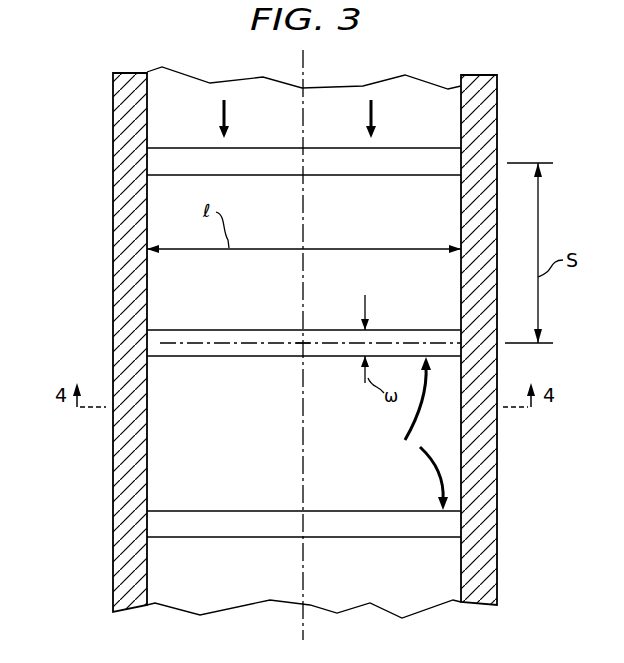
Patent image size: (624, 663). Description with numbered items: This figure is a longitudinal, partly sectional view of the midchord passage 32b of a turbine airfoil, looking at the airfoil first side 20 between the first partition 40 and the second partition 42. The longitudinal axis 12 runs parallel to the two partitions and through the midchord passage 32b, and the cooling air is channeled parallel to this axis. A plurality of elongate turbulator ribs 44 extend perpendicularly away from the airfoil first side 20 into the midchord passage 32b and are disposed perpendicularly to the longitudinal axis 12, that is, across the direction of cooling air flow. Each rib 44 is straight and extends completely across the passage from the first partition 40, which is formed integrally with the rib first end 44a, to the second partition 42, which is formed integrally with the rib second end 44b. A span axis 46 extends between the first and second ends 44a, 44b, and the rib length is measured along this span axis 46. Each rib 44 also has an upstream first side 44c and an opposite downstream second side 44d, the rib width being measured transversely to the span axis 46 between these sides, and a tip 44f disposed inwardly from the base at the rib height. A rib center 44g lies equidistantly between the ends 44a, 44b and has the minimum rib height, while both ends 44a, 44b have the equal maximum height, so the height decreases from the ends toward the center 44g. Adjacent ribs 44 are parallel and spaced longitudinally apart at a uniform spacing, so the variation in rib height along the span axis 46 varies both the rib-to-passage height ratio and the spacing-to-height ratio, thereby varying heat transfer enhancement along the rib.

The longitudinal axis 12 is at (304, 79).
The airfoil first side 20 is at (422, 598).
The midchord passage 32b is at (229, 455).
The first partition 40 is at (114, 500).
The second partition 42 is at (497, 545).
The turbulator ribs 44 is at (423, 433).
The rib first end 44a is at (147, 330).
The rib second end 44b is at (461, 330).
The rib first side 44c is at (330, 330).
The rib second side 44d is at (283, 356).
The rib tip 44f is at (172, 356).
The rib center 44g is at (303, 344).
The span axis 46 is at (229, 344).